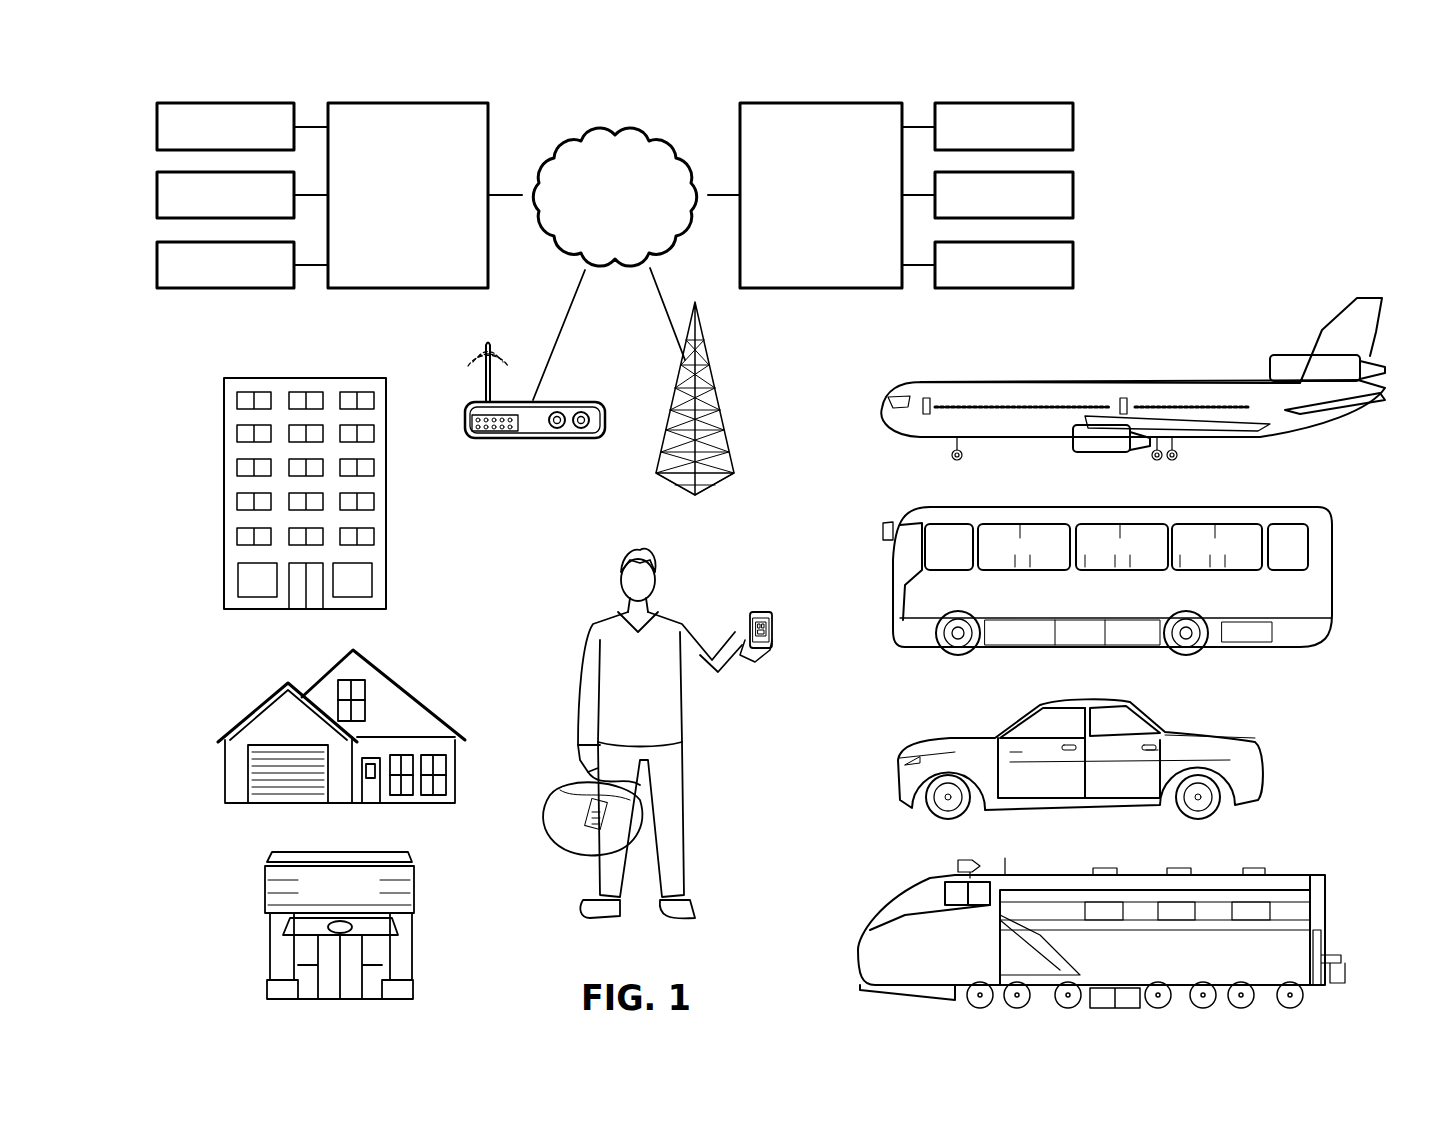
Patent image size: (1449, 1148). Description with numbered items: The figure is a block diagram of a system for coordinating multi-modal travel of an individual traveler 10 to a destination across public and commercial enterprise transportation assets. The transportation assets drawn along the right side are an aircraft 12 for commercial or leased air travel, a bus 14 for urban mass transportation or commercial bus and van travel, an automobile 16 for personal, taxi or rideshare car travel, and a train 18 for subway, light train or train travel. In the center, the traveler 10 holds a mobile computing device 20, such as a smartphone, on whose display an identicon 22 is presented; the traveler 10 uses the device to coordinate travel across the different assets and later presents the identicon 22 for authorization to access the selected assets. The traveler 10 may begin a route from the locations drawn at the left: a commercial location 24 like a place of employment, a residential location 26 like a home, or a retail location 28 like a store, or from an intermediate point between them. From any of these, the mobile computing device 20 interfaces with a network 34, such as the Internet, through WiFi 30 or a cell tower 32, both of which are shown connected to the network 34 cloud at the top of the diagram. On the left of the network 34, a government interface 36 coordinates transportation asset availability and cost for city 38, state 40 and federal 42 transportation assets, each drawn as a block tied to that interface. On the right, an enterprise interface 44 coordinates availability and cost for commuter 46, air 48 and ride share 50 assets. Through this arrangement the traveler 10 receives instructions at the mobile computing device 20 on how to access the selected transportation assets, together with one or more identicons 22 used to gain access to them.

The individual traveler 10 is at (580, 680).
The aircraft 12 is at (1118, 382).
The bus 14 is at (1334, 568).
The automobile 16 is at (1262, 760).
The train 18 is at (1350, 950).
The mobile computing device 20 is at (751, 620).
The identicon 22 is at (760, 616).
The commercial location 24 is at (224, 495).
The residential location 26 is at (225, 772).
The retail location 28 is at (268, 947).
The WiFi 30 is at (522, 440).
The cell tower 32 is at (722, 412).
The network 34 is at (601, 230).
The government interface 36 is at (394, 242).
The city 38 is at (157, 113).
The state 40 is at (157, 183).
The federal 42 is at (157, 253).
The enterprise interface 44 is at (806, 242).
The commuter 46 is at (1073, 115).
The air 48 is at (1073, 185).
The ride share 50 is at (1073, 255).